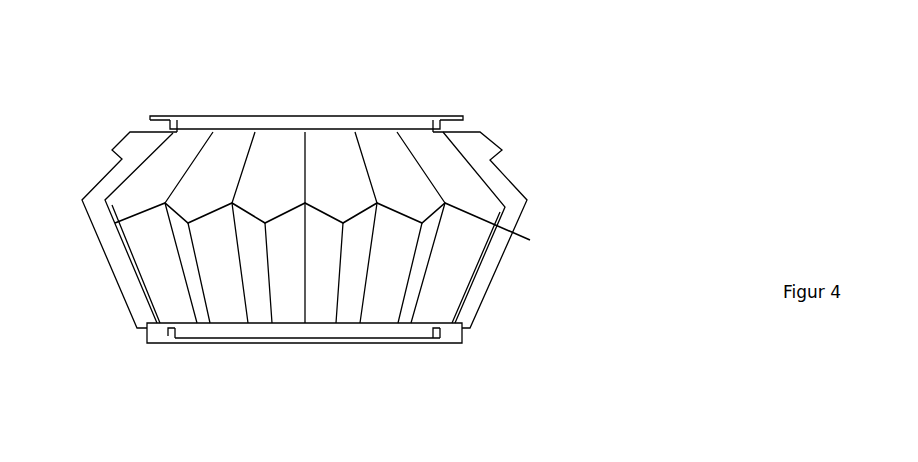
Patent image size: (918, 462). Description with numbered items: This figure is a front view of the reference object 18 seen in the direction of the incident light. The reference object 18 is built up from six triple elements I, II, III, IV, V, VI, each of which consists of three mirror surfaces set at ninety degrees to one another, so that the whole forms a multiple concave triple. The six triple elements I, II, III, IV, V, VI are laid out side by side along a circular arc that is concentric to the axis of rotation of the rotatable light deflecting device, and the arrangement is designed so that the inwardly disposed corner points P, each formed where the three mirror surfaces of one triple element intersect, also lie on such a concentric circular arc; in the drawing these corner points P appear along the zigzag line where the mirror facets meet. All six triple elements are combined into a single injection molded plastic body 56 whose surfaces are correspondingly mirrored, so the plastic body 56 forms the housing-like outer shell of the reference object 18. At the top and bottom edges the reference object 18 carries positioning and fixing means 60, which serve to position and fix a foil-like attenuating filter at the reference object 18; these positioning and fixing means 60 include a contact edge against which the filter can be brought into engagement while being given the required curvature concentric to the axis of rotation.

The reference object 18 is at (535, 65).
The positioning and fixing means 60 is at (198, 113).
The injection molded plastic body 56 is at (123, 139).
The triple element I is at (138, 278).
The triple element II is at (215, 175).
The triple element III is at (283, 265).
The triple element IV is at (335, 185).
The triple element V is at (385, 255).
The triple element VI is at (457, 183).
The inwardly disposed corner point P is at (272, 160).